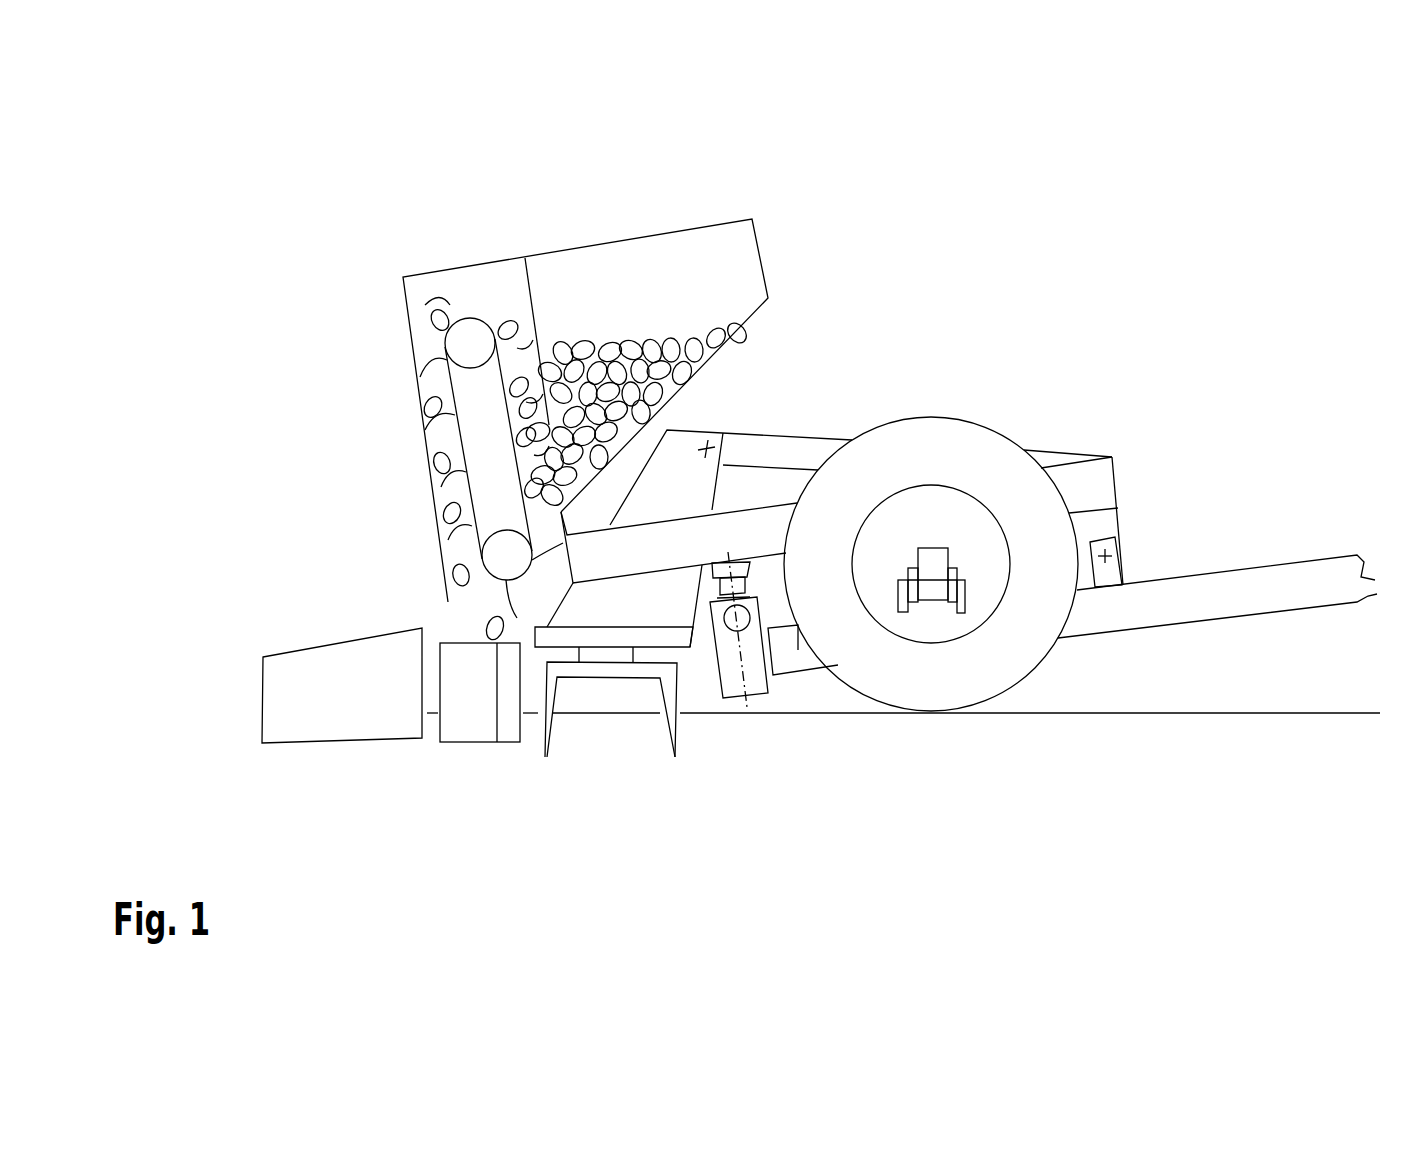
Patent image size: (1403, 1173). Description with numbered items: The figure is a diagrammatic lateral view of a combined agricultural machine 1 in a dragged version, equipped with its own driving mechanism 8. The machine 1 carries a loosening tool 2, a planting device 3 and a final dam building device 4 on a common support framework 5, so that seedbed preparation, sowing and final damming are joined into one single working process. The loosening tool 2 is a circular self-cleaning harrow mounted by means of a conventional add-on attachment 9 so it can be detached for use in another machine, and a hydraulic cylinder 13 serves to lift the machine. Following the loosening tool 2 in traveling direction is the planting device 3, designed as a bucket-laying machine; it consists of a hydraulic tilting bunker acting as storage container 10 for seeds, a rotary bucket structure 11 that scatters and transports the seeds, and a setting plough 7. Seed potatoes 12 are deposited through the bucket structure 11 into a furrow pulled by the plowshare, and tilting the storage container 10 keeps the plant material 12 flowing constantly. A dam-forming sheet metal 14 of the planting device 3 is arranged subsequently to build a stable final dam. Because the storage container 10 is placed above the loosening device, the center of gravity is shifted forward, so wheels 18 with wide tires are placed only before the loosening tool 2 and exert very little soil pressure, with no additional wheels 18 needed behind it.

The combined agricultural machine 1 is at (976, 293).
The loosening tool 2 is at (672, 692).
The planting device 3 is at (405, 444).
The final dam building device 4 is at (315, 664).
The dam-forming sheet metal 14 is at (325, 647).
The common support framework 5 is at (1142, 602).
The setting plough 7 is at (517, 723).
The driving mechanism 8 is at (1021, 425).
The add-on attachment 9 is at (723, 433).
The storage container 10 is at (658, 278).
The rotary bucket structure 11 is at (460, 490).
The seed potatoes 12 is at (568, 340).
The hydraulic cylinder 13 is at (757, 655).
The wheels 18 is at (963, 628).